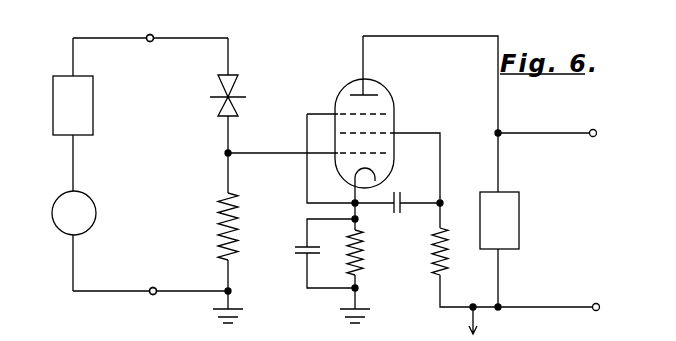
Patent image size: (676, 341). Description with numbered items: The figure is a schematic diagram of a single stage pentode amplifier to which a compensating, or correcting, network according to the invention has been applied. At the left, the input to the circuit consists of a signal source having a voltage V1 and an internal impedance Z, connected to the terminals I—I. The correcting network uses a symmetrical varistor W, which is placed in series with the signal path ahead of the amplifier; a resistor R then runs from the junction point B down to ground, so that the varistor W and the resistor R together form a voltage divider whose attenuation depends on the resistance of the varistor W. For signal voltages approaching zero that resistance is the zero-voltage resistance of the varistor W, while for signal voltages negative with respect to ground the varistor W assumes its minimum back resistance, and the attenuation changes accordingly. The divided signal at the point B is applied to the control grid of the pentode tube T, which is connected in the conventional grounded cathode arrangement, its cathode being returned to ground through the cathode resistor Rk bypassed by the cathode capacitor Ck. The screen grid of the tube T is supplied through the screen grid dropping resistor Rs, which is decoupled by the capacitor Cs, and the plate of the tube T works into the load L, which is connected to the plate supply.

The terminals I is at (149, 34).
The internal impedance Z is at (73, 105).
The voltage V1 is at (74, 213).
The symmetrical varistor W is at (238, 89).
The junction point B is at (225, 153).
The resistor R is at (233, 216).
The pentode tube T is at (383, 89).
The capacitor Cs is at (390, 196).
The cathode capacitor Ck is at (300, 251).
The cathode resistor Rk is at (360, 243).
The screen grid dropping resistor Rs is at (446, 243).
The load L is at (499, 220).